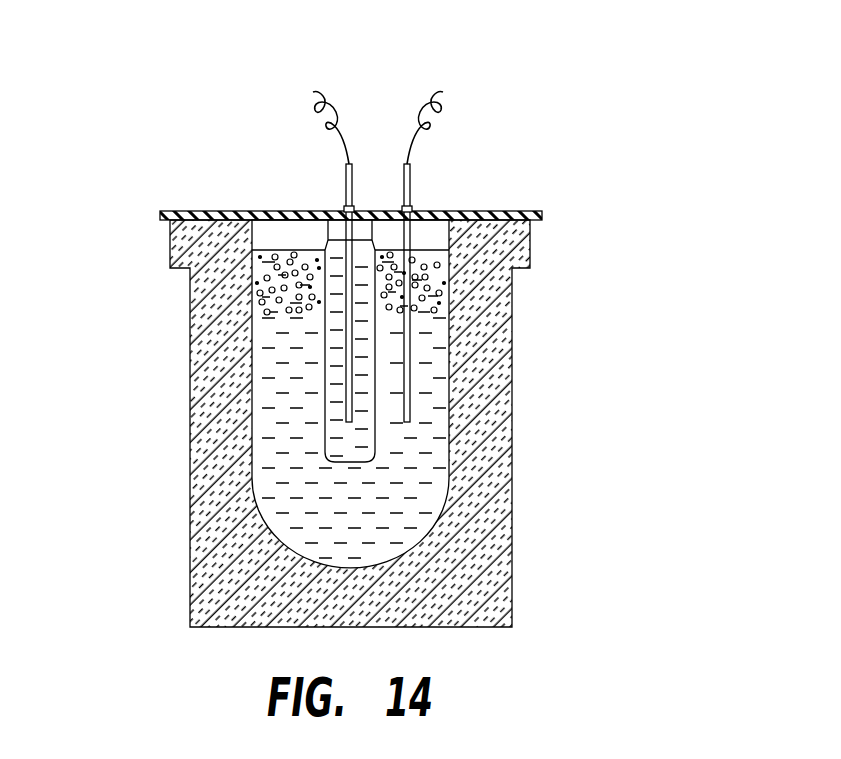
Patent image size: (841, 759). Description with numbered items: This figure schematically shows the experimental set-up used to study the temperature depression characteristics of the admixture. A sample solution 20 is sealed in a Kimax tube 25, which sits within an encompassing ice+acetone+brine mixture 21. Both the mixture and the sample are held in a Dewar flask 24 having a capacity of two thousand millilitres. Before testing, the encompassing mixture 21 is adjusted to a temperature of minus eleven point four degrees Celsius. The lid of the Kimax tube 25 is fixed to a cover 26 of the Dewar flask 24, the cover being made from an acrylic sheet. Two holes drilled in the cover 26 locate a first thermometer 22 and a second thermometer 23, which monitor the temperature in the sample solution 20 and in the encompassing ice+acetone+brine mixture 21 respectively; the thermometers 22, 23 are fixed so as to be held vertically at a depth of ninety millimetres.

The sample solution 20 is at (335, 399).
The ice+acetone+brine mixture 21 is at (302, 488).
The thermometer 22 is at (321, 91).
The thermometer 23 is at (441, 91).
The Dewar flask 24 is at (190, 597).
The Kimax tube 25 is at (375, 447).
The cover 26 is at (160, 215).